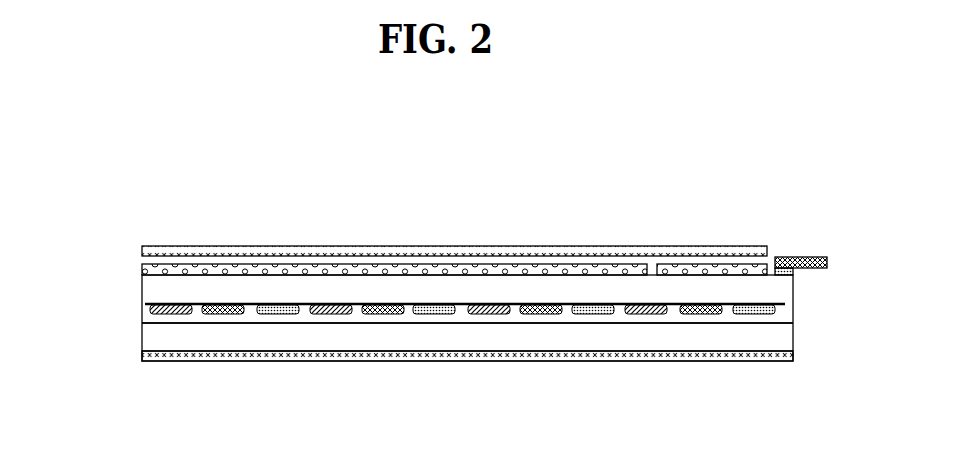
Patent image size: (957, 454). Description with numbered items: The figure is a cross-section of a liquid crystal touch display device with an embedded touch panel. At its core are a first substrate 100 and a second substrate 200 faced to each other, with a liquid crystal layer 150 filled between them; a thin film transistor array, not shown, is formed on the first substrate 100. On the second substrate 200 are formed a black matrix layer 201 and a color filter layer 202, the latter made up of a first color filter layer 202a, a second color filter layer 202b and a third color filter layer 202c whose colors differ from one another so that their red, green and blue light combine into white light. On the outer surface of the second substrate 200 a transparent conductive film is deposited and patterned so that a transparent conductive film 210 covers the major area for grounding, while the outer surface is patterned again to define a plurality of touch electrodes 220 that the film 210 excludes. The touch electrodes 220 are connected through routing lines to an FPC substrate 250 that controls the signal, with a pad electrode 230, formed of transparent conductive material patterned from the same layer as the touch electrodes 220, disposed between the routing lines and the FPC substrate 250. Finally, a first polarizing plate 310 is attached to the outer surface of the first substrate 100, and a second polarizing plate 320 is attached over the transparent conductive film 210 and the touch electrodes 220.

The first substrate 100 is at (142, 342).
The liquid crystal layer 150 is at (142, 318).
The second substrate 200 is at (142, 293).
The black matrix layer 201 is at (302, 304).
The color filter layer 202 is at (442, 203).
The first color filter layer 202a is at (336, 304).
The second color filter layer 202b is at (382, 304).
The third color filter layer 202c is at (433, 304).
The transparent conductive film 210 is at (142, 272).
The touch electrodes 220 is at (712, 273).
The pad electrode 230 is at (793, 274).
The FPC substrate 250 is at (817, 257).
The first polarizing plate 310 is at (165, 357).
The second polarizing plate 320 is at (142, 250).